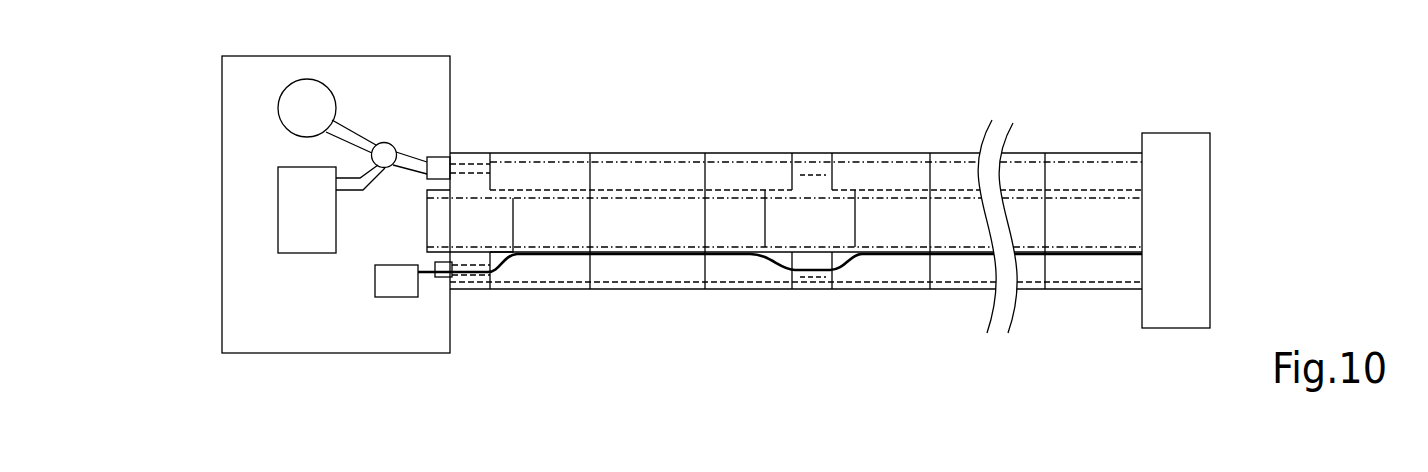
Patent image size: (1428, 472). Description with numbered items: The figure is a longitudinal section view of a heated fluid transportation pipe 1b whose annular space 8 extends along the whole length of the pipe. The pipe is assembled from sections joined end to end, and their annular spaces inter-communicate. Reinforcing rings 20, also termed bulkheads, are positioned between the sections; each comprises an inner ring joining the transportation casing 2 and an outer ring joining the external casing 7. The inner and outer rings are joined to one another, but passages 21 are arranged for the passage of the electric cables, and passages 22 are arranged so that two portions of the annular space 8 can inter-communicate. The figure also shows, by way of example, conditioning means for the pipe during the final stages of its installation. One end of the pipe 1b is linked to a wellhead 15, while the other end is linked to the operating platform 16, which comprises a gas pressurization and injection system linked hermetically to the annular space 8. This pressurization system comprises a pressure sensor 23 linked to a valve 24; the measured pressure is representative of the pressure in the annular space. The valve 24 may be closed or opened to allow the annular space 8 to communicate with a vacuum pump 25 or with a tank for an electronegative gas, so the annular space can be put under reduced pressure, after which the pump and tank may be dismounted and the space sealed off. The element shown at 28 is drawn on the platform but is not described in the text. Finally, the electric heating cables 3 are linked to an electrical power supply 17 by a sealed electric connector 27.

The heated fluid transportation pipe 1b is at (1107, 124).
The transportation casing 2 is at (567, 190).
The electric heating cables 3 is at (572, 256).
The external casing 7 is at (665, 154).
The annular space 8 is at (620, 168).
The wellhead 15 is at (1176, 230).
The operating platform 16 is at (230, 333).
The electrical power supply 17 is at (396, 281).
The reinforcing rings 20 is at (475, 290).
The passages 21 is at (797, 277).
The passages 22 is at (812, 160).
The pressure sensor 23 is at (439, 156).
The valve 24 is at (383, 143).
The vacuum pump 25 is at (307, 108).
The sealed electric connector 27 is at (440, 278).
The control unit 28 is at (307, 210).